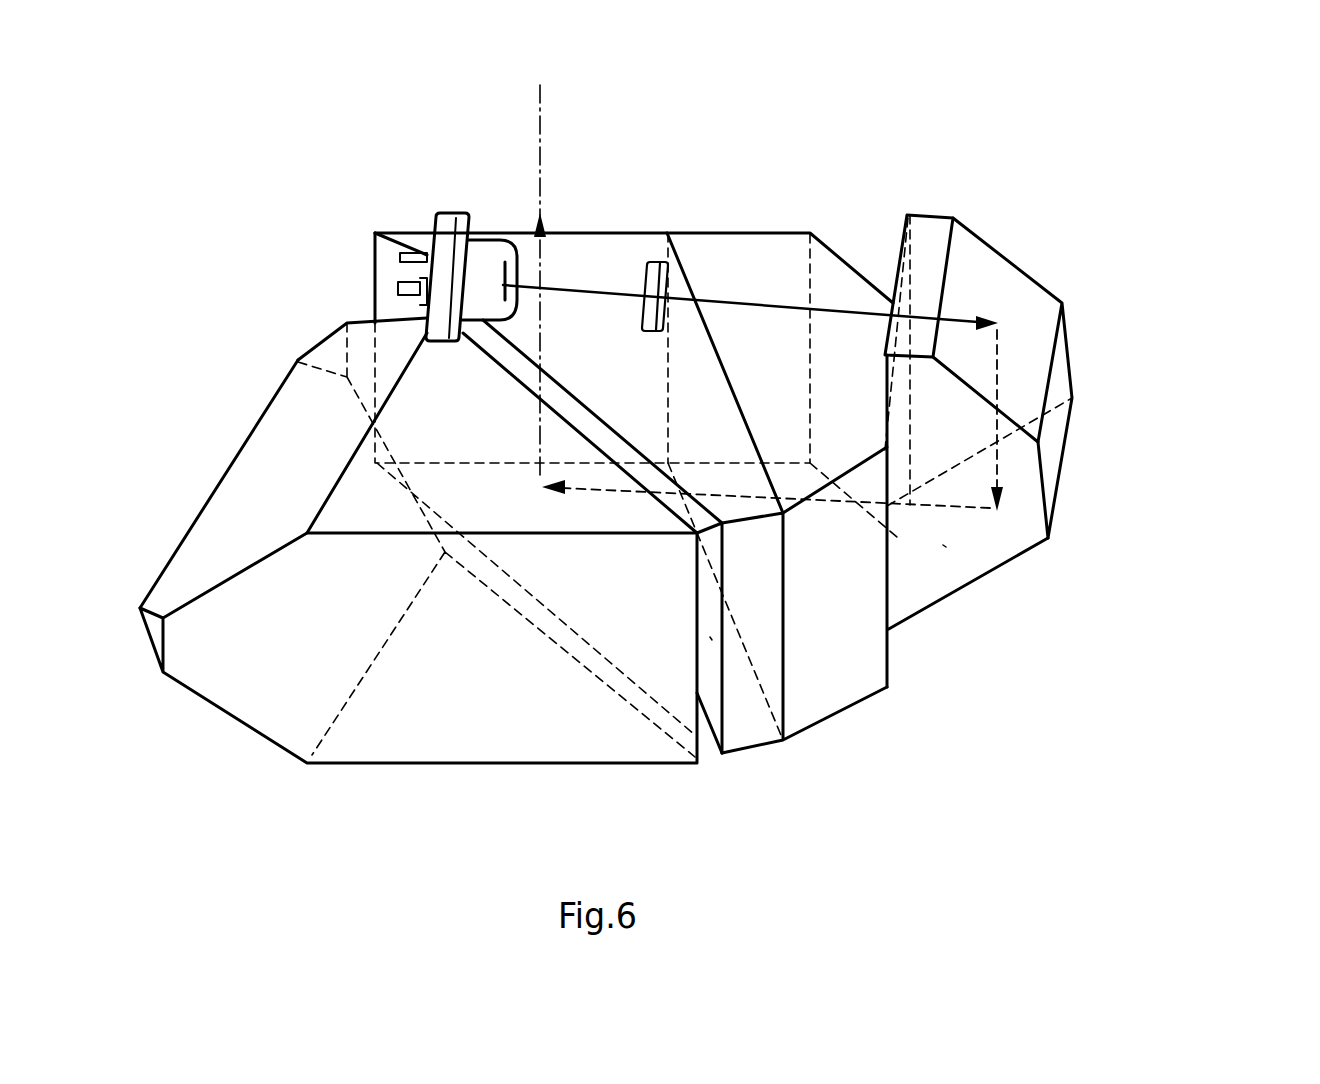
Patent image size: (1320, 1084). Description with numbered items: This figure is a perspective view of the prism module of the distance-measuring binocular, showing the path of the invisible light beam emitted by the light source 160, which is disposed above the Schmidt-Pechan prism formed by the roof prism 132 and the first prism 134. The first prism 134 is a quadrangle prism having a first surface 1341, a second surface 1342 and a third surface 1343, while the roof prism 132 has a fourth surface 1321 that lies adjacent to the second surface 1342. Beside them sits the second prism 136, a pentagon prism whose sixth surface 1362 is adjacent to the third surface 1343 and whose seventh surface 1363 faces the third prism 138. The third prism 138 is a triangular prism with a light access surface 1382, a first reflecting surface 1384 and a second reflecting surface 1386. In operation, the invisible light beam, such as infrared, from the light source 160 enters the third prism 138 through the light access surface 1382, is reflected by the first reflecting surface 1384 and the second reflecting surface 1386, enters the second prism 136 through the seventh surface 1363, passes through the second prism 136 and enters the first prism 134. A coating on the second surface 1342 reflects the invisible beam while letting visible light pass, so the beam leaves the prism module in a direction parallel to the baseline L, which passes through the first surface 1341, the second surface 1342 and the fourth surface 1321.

The roof prism 132 is at (412, 725).
The fourth surface 1321 is at (698, 693).
The first prism 134 is at (611, 250).
The first surface 1341 is at (398, 232).
The second surface 1342 is at (710, 637).
The third surface 1343 is at (783, 570).
The second prism 136 is at (755, 255).
The sixth surface 1362 is at (783, 640).
The seventh surface 1363 is at (887, 643).
The third prism 138 is at (1031, 222).
The light access surface 1382 is at (883, 407).
The first reflecting surface 1384 is at (1018, 382).
The second reflecting surface 1386 is at (943, 545).
The light source 160 is at (490, 244).
The baseline L is at (543, 123).